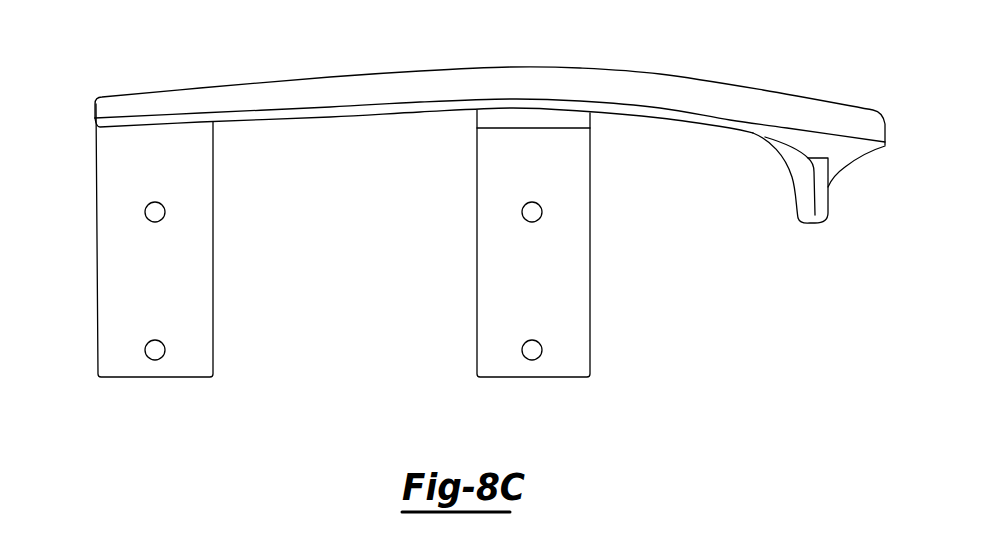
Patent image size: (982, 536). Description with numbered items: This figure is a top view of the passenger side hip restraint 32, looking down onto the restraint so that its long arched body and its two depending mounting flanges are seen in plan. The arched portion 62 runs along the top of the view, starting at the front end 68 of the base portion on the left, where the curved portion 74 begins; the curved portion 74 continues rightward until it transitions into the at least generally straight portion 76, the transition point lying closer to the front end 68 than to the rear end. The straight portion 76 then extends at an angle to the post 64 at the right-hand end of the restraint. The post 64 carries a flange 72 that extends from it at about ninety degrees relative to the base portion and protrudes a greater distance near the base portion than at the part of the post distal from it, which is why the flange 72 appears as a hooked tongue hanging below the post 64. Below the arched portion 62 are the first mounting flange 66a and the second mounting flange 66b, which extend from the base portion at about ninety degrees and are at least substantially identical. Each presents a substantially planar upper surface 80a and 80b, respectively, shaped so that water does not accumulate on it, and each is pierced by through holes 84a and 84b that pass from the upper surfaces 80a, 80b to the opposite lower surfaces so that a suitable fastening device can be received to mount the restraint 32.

The passenger side hip restraint 32 is at (84, 172).
The arched portion 62 is at (443, 76).
The post 64 is at (836, 188).
The first mounting flange 66a is at (477, 305).
The second mounting flange 66b is at (100, 305).
The front end 68 is at (118, 105).
The flange 72 is at (817, 220).
The curved portion 74 is at (162, 102).
The straight portion 76 is at (690, 95).
The upper surface 80a is at (480, 357).
The upper surface 80b is at (107, 355).
The through hole 84a is at (534, 210).
The through hole 84b is at (157, 210).